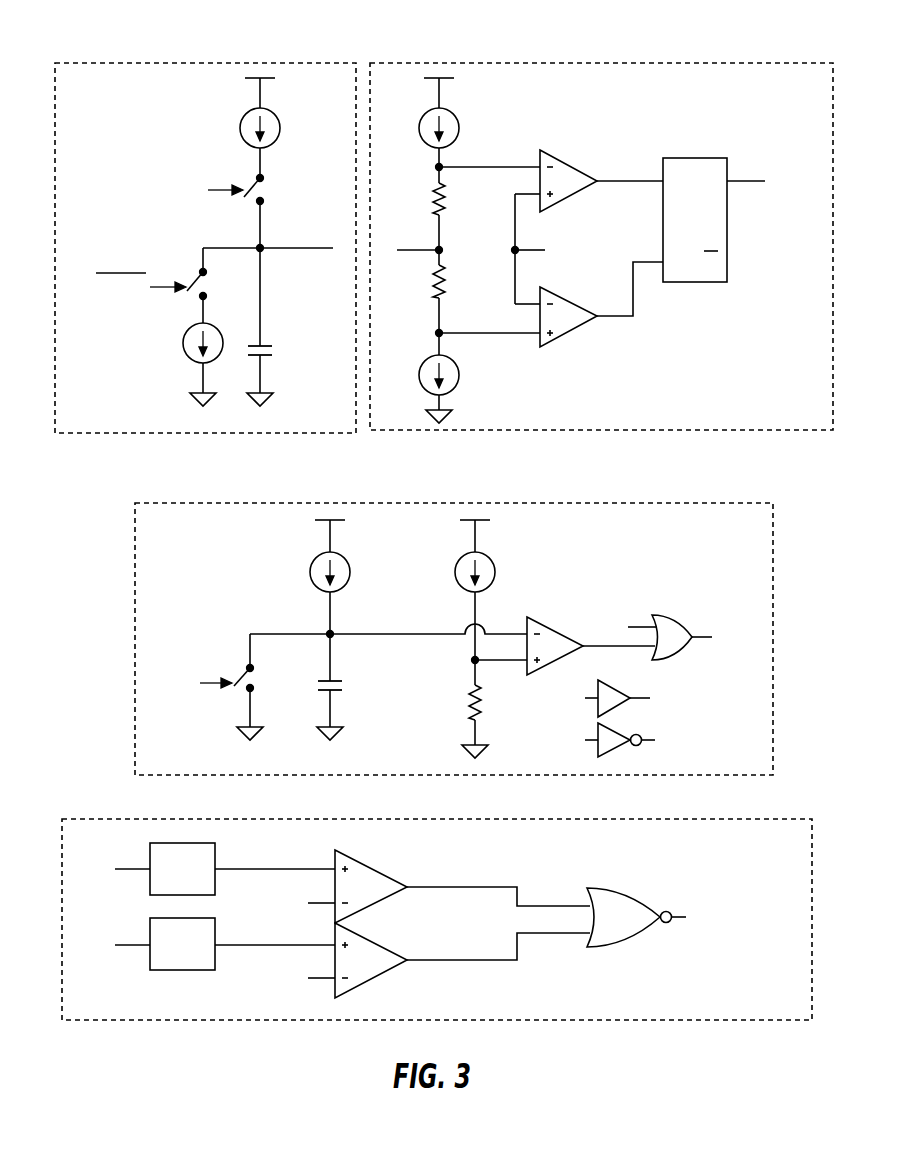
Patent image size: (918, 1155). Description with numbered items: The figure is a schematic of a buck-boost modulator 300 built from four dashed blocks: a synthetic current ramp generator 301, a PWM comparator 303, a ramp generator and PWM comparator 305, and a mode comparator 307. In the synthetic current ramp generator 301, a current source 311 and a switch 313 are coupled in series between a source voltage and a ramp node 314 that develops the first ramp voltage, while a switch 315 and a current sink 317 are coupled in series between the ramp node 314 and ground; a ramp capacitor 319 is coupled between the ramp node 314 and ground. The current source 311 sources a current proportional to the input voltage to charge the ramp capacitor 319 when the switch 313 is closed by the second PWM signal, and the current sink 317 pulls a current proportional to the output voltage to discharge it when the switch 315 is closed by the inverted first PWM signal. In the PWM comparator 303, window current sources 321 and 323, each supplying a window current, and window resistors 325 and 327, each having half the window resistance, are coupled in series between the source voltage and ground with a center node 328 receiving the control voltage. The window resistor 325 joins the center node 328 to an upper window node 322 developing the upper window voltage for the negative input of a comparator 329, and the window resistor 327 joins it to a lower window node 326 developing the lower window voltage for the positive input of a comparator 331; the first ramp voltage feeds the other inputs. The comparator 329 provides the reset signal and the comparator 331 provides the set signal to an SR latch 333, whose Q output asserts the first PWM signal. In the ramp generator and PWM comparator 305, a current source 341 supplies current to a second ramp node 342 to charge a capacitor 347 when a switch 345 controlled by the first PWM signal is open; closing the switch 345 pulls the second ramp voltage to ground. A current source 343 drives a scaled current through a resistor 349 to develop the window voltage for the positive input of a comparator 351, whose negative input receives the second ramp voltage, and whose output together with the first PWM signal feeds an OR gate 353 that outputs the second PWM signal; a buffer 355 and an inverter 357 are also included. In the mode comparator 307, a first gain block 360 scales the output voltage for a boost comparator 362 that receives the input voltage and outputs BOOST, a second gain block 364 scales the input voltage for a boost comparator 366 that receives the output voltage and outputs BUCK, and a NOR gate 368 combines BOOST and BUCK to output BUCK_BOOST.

The buck-boost modulator 300 is at (829, 603).
The synthetic current ramp generator 301 is at (313, 63).
The PWM comparator 303 is at (748, 63).
The ramp generator and PWM comparator 305 is at (648, 503).
The mode comparator 307 is at (800, 819).
The current source 311 is at (281, 122).
The switch 313 is at (266, 181).
The ramp node 314 is at (264, 246).
The switch 315 is at (200, 269).
The current sink 317 is at (191, 359).
The ramp capacitor 319 is at (270, 345).
The window current source 321 is at (458, 117).
The upper window node 322 is at (436, 166).
The window current source 323 is at (421, 374).
The window resistor 325 is at (434, 201).
The lower window node 326 is at (436, 333).
The window resistor 327 is at (434, 292).
The center node 328 is at (437, 249).
The comparator 329 is at (578, 169).
The comparator 331 is at (582, 302).
The set-reset (SR) latch 333 is at (697, 158).
The current source 341 is at (346, 557).
The ramp node 342 is at (328, 633).
The current source 343 is at (491, 557).
The switch 345 is at (256, 688).
The capacitor 347 is at (340, 683).
The resistor 349 is at (464, 735).
The comparator 351 is at (540, 620).
The OR gate 353 is at (672, 617).
The buffer 355 is at (610, 687).
The inverter 357 is at (614, 749).
The first gain block 360 is at (150, 889).
The boost comparator 362 is at (377, 863).
The second gain block 364 is at (150, 964).
The boost comparator 366 is at (377, 946).
The NOR gate 368 is at (607, 928).